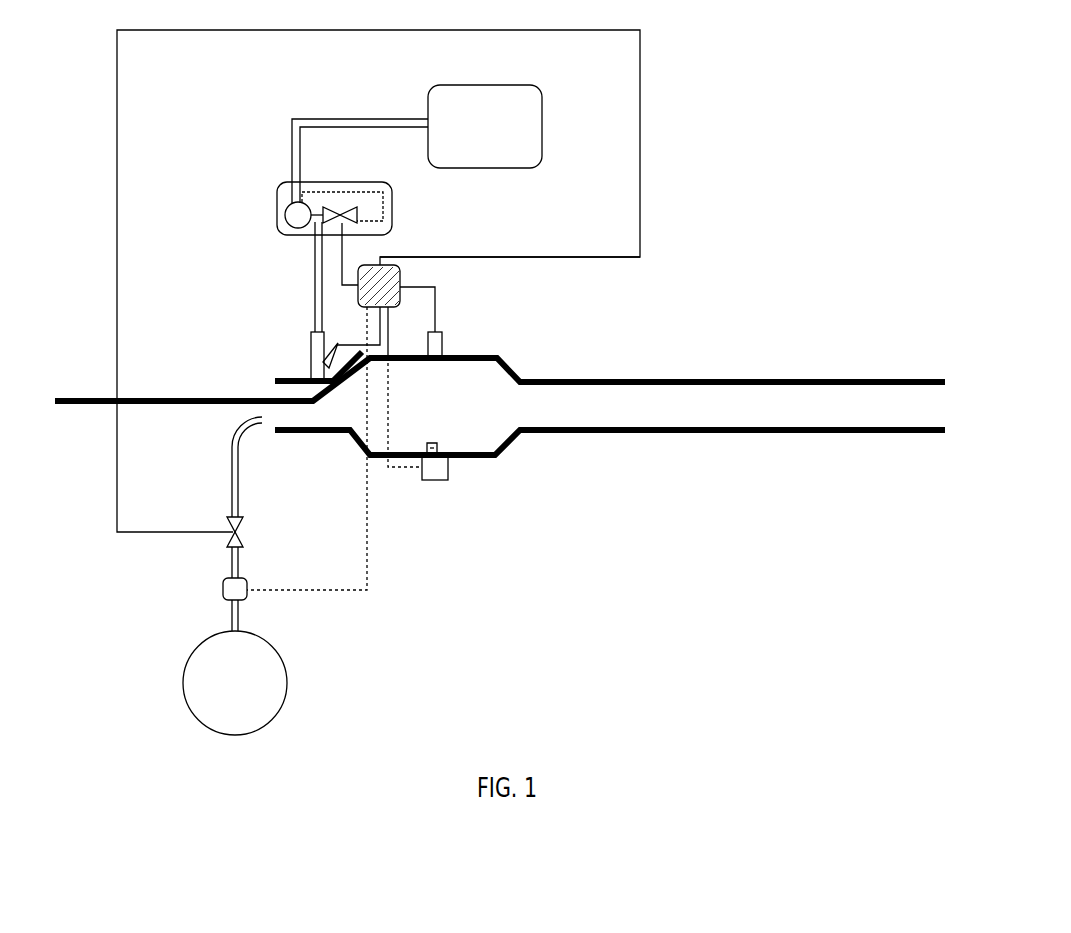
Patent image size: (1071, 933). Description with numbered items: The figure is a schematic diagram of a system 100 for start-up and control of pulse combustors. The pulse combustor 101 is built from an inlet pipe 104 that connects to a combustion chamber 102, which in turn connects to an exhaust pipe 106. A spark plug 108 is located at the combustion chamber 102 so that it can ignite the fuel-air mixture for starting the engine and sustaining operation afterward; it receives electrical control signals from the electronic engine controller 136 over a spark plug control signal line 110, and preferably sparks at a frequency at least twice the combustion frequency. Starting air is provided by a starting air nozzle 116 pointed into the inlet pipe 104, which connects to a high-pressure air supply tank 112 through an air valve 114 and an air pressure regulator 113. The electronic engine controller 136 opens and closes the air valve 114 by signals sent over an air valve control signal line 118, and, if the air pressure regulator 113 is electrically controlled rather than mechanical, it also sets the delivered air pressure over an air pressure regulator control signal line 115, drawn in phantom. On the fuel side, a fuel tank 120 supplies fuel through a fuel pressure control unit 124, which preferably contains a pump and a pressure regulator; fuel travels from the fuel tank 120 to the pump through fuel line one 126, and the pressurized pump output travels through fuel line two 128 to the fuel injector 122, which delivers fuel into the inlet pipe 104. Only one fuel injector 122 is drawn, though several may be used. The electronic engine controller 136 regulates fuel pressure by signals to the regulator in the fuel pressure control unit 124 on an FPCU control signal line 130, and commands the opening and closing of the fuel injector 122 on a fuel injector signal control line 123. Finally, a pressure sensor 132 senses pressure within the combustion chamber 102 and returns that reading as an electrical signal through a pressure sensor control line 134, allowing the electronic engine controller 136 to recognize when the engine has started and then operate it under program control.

The system for start-up and control of pulse combustors 100 is at (486, 382).
The pulse combustor 101 is at (486, 472).
The combustion chamber 102 is at (497, 458).
The inlet pipe 104 is at (313, 435).
The exhaust pipe 106 is at (862, 434).
The spark plug 108 is at (433, 481).
The spark plug control signal line 110 is at (410, 468).
The high-pressure air supply tank 112 is at (183, 680).
The air pressure regulator 113 is at (222, 591).
The air valve 114 is at (232, 533).
The air pressure regulator control signal line 115 is at (262, 594).
The starting air nozzle 116 is at (247, 437).
The air valve control signal line 118 is at (117, 223).
The fuel tank 120 is at (427, 113).
The fuel injector 122 is at (310, 346).
The fuel injector signal control line 123 is at (110, 400).
The fuel pressure control unit 124 is at (275, 208).
The fuel line 1 126 is at (291, 155).
The fuel line 2 128 is at (313, 296).
The FPCU control signal line 130 is at (362, 262).
The pressure sensor 132 is at (444, 346).
The pressure sensor control line 134 is at (437, 302).
The electronic engine controller 136 is at (403, 282).